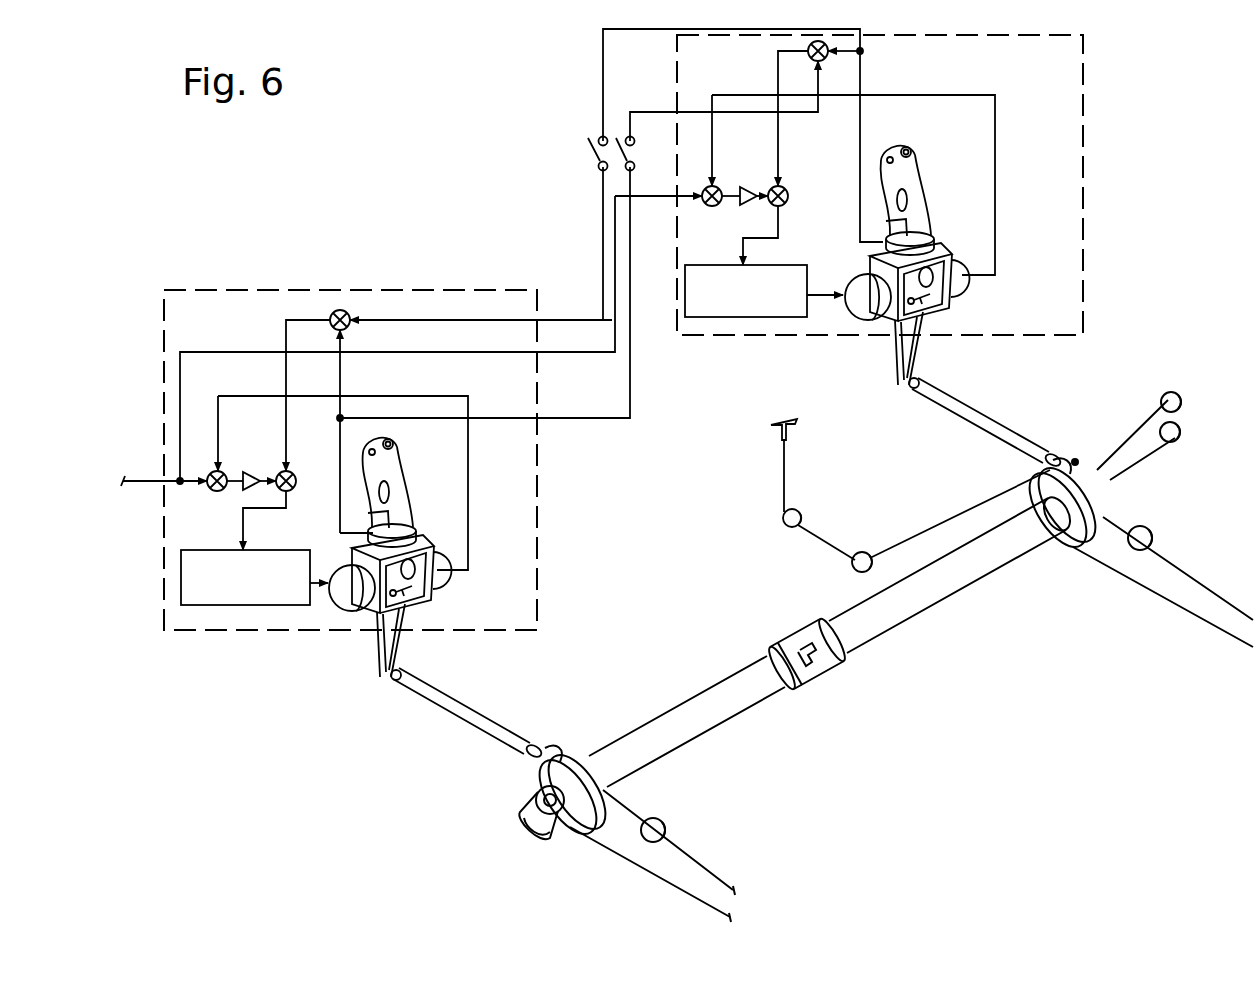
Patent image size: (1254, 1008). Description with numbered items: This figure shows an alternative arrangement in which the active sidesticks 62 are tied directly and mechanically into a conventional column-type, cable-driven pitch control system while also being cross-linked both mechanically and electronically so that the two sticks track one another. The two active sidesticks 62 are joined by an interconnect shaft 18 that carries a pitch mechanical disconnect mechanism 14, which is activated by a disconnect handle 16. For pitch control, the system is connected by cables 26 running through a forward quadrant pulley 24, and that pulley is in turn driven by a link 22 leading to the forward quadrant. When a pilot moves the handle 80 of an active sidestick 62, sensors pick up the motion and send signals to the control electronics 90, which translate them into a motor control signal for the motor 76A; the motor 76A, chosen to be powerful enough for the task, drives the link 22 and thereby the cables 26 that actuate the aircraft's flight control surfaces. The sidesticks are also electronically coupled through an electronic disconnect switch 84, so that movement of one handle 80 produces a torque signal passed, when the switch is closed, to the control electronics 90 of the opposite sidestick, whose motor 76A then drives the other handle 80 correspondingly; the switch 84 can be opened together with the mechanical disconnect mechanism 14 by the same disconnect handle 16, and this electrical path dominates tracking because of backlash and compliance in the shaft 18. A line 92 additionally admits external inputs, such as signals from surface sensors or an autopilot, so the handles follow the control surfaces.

The pitch mechanical disconnect mechanism 14 is at (852, 570).
The disconnect handle 16 is at (770, 430).
The interconnect shaft 18 is at (723, 708).
The link 22 is at (462, 702).
The forward quadrant pulley 24 is at (540, 822).
The cables 26 is at (697, 870).
The active sidestick 62 is at (656, 413).
The motor 76A is at (340, 578).
The handle 80 is at (405, 483).
The electronic disconnect switch 84 is at (590, 133).
The control electronics 90 is at (218, 607).
The line 92 is at (143, 477).